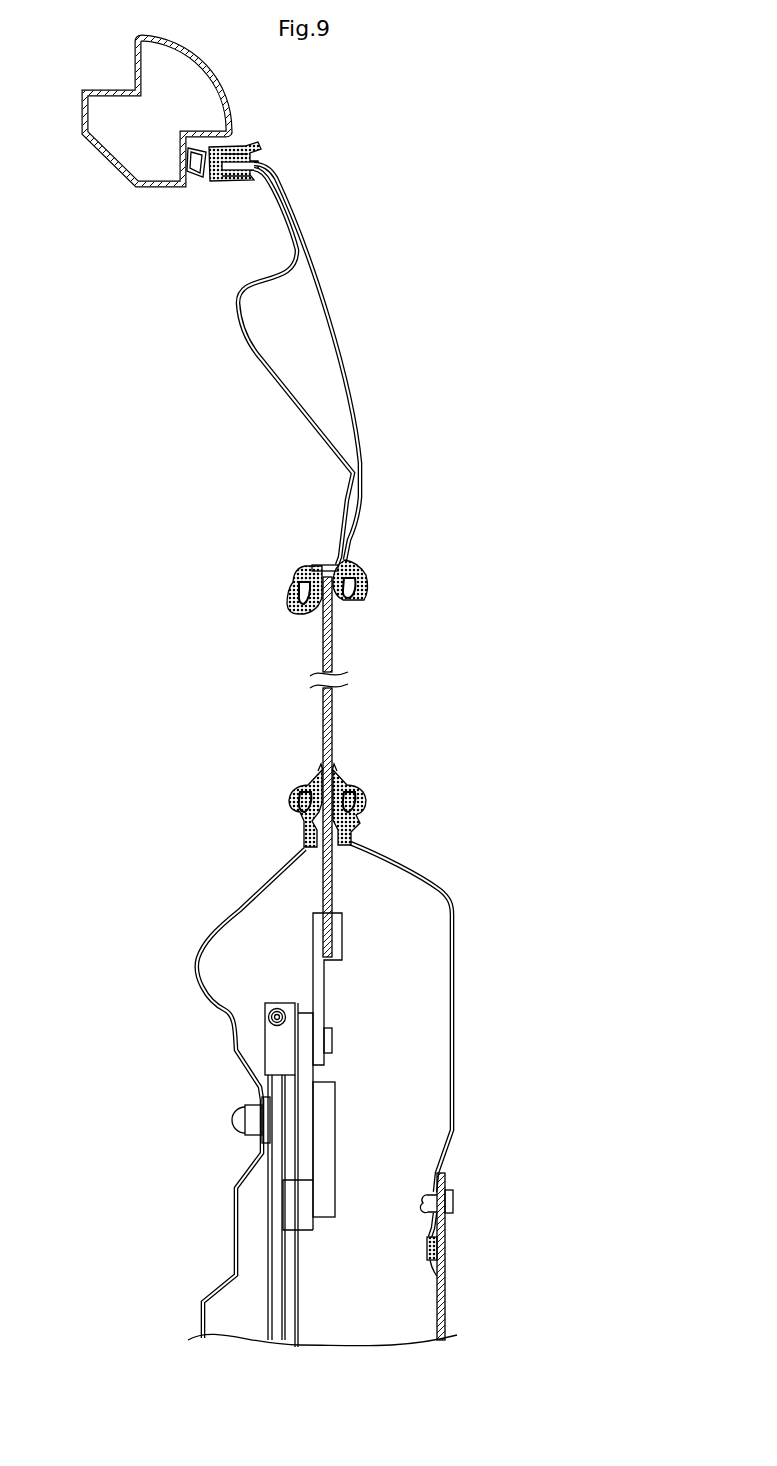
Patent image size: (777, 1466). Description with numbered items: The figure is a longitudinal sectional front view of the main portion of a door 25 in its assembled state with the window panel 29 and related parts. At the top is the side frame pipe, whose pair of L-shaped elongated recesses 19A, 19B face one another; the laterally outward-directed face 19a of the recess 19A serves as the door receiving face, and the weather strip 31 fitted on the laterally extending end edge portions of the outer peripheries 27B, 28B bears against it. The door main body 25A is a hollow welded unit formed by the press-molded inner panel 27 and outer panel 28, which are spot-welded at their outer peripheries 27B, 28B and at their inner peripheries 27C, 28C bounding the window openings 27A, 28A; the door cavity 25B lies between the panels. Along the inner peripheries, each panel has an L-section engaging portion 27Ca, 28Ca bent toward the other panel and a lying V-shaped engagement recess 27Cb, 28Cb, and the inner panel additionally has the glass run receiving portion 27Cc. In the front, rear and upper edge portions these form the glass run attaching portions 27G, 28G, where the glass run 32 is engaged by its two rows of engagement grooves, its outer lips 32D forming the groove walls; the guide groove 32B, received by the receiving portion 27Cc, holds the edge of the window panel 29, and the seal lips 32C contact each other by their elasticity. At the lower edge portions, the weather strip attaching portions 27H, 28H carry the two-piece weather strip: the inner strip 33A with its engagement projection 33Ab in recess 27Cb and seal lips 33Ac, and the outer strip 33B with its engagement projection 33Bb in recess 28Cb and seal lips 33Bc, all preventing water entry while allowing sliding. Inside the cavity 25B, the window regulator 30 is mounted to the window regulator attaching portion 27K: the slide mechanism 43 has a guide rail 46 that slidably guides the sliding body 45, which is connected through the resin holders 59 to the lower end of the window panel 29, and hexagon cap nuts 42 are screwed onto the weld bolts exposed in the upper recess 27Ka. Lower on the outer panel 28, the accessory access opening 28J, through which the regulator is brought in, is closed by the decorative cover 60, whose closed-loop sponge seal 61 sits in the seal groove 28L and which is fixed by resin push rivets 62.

The elongated recess 19B is at (108, 88).
The laterally outward-directed face 19a is at (189, 178).
The elongated recess 19A is at (204, 178).
The weather strip 31 is at (234, 147).
The outer panel 28 is at (345, 376).
The inner panel 27 is at (262, 366).
The outer periphery 28B is at (280, 178).
The door 25 is at (368, 221).
The outer periphery 27B is at (282, 208).
The door main body 25A is at (340, 305).
The inner periphery 27C is at (350, 502).
The inner periphery 28C is at (362, 502).
The glass run receiving portion 27Cc is at (326, 563).
The guide groove 32B is at (354, 558).
The glass run attaching portion 27G is at (311, 569).
The glass run attaching portion 28G is at (363, 567).
The engagement recess 27Cb is at (298, 586).
The engagement recess 28Cb is at (370, 571).
The outer lip 32D is at (292, 600).
The engaging portion 27Ca is at (303, 612).
The engaging portion 28Ca is at (362, 604).
The glass run 32 is at (351, 622).
The seal lip 32C is at (321, 628).
The window opening 28A is at (344, 668).
The window opening 27A is at (311, 700).
The window panel 29 is at (334, 704).
The seal lip 33Ac is at (320, 772).
The seal lip 33Bc is at (342, 772).
The inner strip 33A is at (290, 800).
The outer strip 33B is at (352, 778).
The engagement projection 33Bb is at (362, 826).
The engagement projection 33Ab is at (303, 824).
The weather strip attaching portion 28H is at (357, 838).
The weather strip attaching portion 27H is at (303, 858).
The window regulator 30 is at (272, 991).
The door cavity 25B is at (426, 960).
The holder 59 is at (328, 988).
The window regulator attaching portion 27K is at (231, 1076).
The slide mechanism 43 is at (340, 1101).
The hexagon cap nut 42 is at (228, 1120).
The sliding body 45 is at (332, 1158).
The upper recess 27Ka is at (248, 1165).
The push rivet 62 is at (454, 1200).
The seal 61 is at (429, 1240).
The guide rail 46 is at (299, 1264).
The seal groove 28L is at (447, 1255).
The accessory access opening 28J is at (433, 1264).
The decorative cover 60 is at (447, 1308).